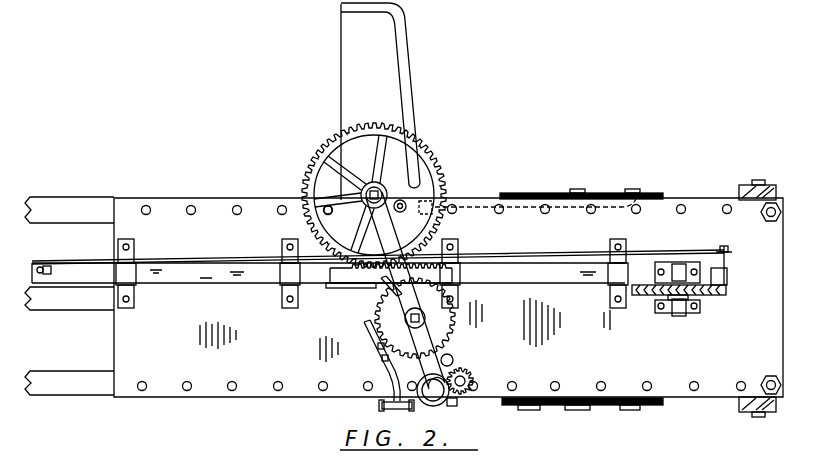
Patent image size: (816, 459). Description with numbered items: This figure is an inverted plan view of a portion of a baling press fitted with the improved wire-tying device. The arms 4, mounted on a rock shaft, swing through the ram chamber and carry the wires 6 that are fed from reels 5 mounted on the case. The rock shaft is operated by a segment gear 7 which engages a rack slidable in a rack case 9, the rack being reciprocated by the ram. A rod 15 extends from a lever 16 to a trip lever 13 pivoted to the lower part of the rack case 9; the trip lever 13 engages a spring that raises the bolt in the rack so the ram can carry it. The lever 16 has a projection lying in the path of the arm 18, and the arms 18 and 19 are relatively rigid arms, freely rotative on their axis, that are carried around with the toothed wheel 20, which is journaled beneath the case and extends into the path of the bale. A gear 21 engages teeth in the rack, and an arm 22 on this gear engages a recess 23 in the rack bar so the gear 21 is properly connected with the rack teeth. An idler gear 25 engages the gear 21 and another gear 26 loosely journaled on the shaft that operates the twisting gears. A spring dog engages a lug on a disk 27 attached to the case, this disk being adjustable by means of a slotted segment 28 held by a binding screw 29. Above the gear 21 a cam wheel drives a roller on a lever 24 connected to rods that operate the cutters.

The arms 4 is at (413, 80).
The reels 5 is at (612, 193).
The wires 6 is at (340, 73).
The segment gear 7 is at (322, 170).
The rack case 9 is at (214, 285).
The trip lever 13 is at (47, 267).
The rod 15 is at (227, 262).
The lever 16 is at (728, 278).
The arm 18 is at (722, 262).
The arm 19 is at (636, 272).
The toothed wheel 20 is at (658, 300).
The gear 21 is at (450, 325).
The arm 22 is at (389, 286).
The recess 23 is at (358, 284).
The lever 24 is at (375, 356).
The idler gear 25 is at (455, 360).
The gear 26 is at (432, 406).
The adjustable disk 27 is at (449, 404).
The slotted segment 28 is at (458, 405).
The binding screw 29 is at (466, 378).